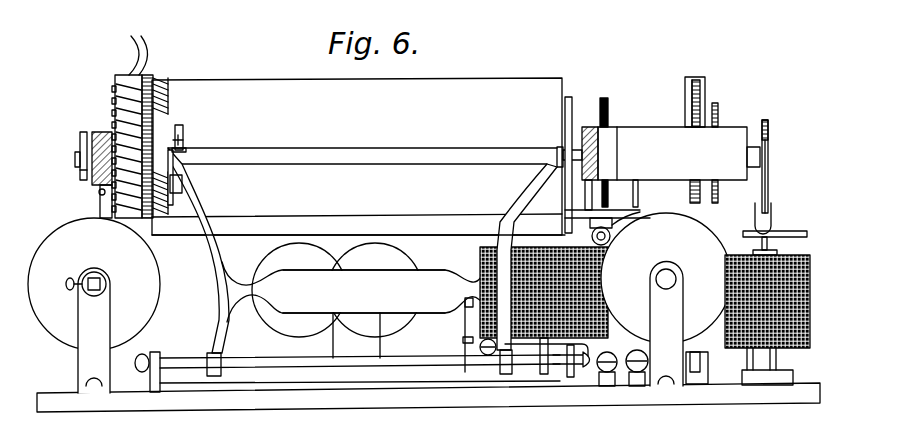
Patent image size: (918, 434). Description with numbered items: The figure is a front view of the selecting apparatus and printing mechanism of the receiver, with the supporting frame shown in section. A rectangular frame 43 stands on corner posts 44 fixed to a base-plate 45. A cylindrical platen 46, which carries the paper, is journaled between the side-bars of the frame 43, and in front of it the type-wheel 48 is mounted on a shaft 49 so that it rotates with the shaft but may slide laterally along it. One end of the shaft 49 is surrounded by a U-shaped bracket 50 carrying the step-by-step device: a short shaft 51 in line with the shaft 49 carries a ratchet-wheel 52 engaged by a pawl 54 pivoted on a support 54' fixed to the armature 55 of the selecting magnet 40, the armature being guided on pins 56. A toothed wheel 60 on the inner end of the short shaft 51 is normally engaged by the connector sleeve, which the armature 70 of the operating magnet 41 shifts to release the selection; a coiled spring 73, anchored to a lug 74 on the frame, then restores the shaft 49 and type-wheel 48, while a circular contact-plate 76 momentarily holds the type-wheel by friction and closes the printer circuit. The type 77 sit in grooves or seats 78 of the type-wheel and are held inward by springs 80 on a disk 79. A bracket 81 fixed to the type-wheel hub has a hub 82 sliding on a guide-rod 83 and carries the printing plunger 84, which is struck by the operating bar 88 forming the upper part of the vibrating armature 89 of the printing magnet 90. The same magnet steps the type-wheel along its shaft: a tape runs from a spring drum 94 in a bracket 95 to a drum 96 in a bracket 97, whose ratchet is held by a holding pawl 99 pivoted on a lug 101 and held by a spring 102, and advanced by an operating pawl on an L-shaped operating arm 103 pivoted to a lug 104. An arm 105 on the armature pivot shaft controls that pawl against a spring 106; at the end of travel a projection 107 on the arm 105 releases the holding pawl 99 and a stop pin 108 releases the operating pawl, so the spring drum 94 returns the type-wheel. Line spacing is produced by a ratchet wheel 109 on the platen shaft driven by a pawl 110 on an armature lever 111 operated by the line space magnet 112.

The selecting magnet 40 is at (786, 348).
The operating magnet 41 is at (508, 246).
The rectangular frame 43 is at (100, 132).
The corner posts 44 is at (100, 200).
The base-plate 45 is at (690, 394).
The cylindrical platen 46 is at (482, 78).
The type-wheel 48 is at (150, 76).
The type-wheel shaft 49 is at (75, 157).
The U-shaped bracket 50 is at (645, 130).
The short shaft 51 is at (752, 146).
The ratchet-wheel 52 is at (770, 124).
The pawl 54 is at (790, 176).
The support 54' is at (790, 209).
The armature 55 is at (788, 228).
The pins 56 is at (768, 242).
The toothed wheel 60 is at (718, 106).
The armature 70 is at (640, 190).
The coiled spring 73 is at (80, 144).
The lug 74 is at (80, 170).
The circular contact-plate 76 is at (608, 102).
The type 77 is at (168, 90).
The grooves or seats 78 is at (446, 425).
The disk 79 is at (116, 90).
The springs 80 is at (135, 226).
The bracket 81 is at (184, 132).
The hub 82 is at (180, 124).
The guide-rod 83 is at (565, 146).
The printing plunger 84 is at (184, 141).
The operating bar 88 is at (398, 142).
The vibrating armature 89 is at (360, 270).
The printing magnet 90 is at (398, 262).
The spring drum 94 is at (94, 284).
The bracket 95 is at (305, 216).
The drum 96 is at (666, 278).
The bracket 97 is at (679, 324).
The holding pawl 99 is at (604, 386).
The lug 101 is at (470, 370).
The spring 102 is at (460, 370).
The L-shaped operating arm 103 is at (612, 340).
The lug 104 is at (612, 385).
The arm 105 is at (570, 378).
The spring 106 is at (543, 376).
The projection 107 is at (510, 374).
The stop pin 108 is at (585, 200).
The ratchet wheel 109 is at (702, 100).
The pawl 110 is at (695, 77).
The armature lever 111 is at (696, 182).
The line space magnet 112 is at (640, 212).